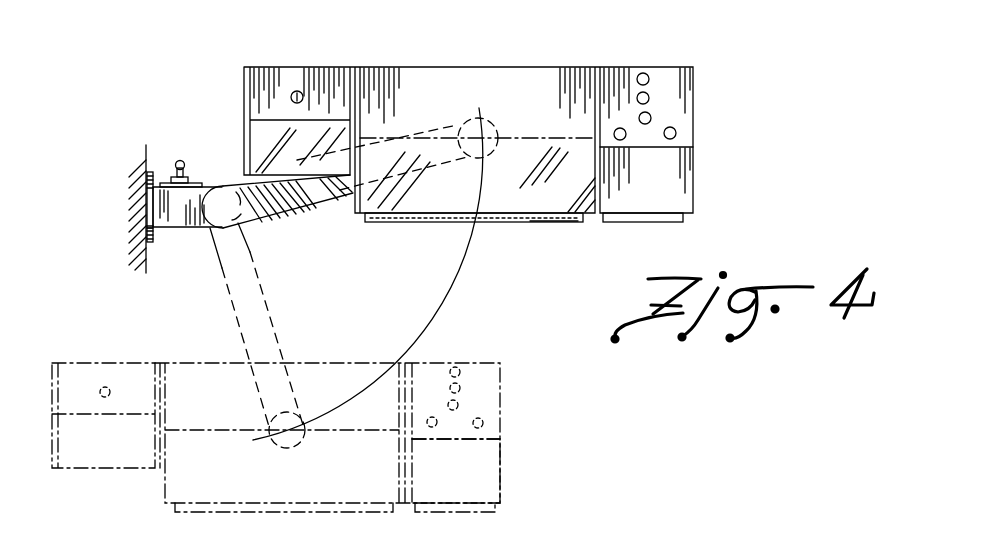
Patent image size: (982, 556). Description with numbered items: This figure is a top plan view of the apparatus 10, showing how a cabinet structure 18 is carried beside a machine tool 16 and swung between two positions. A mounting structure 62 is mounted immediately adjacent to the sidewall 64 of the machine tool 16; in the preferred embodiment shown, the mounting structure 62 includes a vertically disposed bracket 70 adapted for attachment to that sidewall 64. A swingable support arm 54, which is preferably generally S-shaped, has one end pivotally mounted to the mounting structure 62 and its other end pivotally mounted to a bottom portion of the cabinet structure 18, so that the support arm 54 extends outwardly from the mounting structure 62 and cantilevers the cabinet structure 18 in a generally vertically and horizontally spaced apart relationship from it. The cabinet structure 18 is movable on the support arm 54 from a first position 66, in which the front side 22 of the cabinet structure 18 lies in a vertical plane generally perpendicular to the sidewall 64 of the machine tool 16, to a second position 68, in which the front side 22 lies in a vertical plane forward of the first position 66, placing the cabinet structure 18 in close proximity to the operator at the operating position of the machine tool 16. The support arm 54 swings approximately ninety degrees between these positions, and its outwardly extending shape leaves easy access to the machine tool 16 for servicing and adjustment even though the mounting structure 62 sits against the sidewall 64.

The apparatus 10 is at (700, 117).
The machine tool 16 is at (133, 204).
The cabinet structure 18 is at (560, 98).
The front side 22 is at (364, 224).
The swingable support arm 54 is at (270, 316).
The mounting structure 62 is at (190, 202).
The sidewall 64 is at (149, 170).
The first position 66 is at (549, 227).
The second position 68 is at (508, 463).
The vertically disposed bracket 70 is at (155, 244).